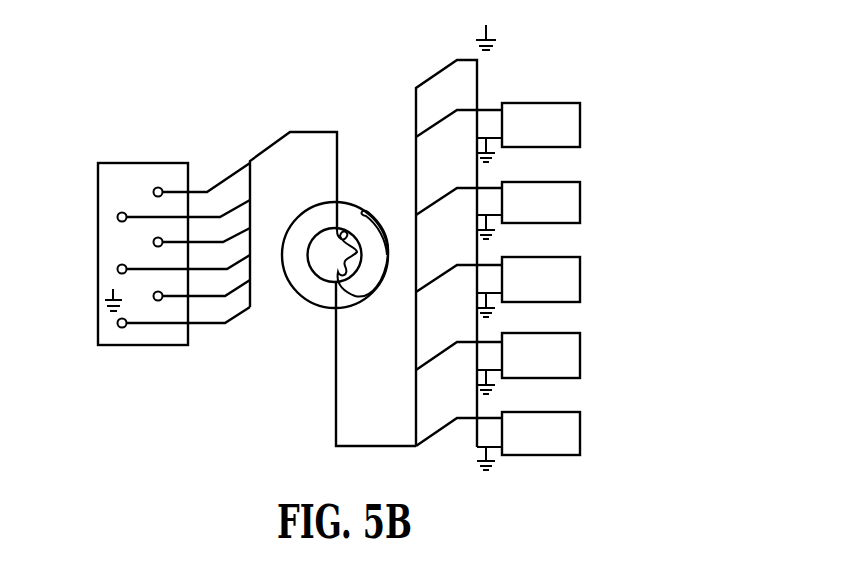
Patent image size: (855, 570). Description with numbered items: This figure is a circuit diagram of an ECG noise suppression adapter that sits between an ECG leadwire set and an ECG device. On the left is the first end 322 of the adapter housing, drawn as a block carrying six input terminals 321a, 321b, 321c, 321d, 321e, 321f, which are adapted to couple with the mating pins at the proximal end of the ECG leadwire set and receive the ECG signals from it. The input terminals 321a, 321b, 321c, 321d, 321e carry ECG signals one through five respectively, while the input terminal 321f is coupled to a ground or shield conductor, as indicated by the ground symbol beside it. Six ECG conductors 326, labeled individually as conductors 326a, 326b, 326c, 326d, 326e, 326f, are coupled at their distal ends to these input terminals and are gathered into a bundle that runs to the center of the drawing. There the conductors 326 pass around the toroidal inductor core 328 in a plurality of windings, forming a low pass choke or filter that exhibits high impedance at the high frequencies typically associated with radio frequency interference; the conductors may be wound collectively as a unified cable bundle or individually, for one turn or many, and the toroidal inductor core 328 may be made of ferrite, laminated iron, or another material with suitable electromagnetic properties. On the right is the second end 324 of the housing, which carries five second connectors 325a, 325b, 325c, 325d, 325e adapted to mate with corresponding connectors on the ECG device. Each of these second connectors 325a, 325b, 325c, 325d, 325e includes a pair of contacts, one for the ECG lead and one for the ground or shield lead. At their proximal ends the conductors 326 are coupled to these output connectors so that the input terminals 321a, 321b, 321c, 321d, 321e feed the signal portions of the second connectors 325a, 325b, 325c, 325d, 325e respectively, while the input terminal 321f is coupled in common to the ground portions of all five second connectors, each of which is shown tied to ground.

The first end 322 is at (98, 190).
The input terminal 321a is at (157, 185).
The input terminal 321b is at (119, 213).
The input terminal 321c is at (162, 238).
The input terminal 321d is at (117, 268).
The input terminal 321e is at (155, 300).
The input terminal 321f is at (118, 325).
The ECG conductors 326 is at (302, 132).
The ECG conductor 326a is at (207, 190).
The ECG conductor 326b is at (222, 216).
The ECG conductor 326c is at (228, 241).
The ECG conductor 326d is at (203, 270).
The ECG conductor 326e is at (218, 297).
The ECG conductor 326f is at (220, 322).
The toroidal inductor core 328 is at (307, 302).
The second end 324 is at (533, 75).
The second connector 325a is at (580, 128).
The second connector 325b is at (580, 205).
The second connector 325c is at (580, 282).
The second connector 325d is at (580, 358).
The second connector 325e is at (580, 436).